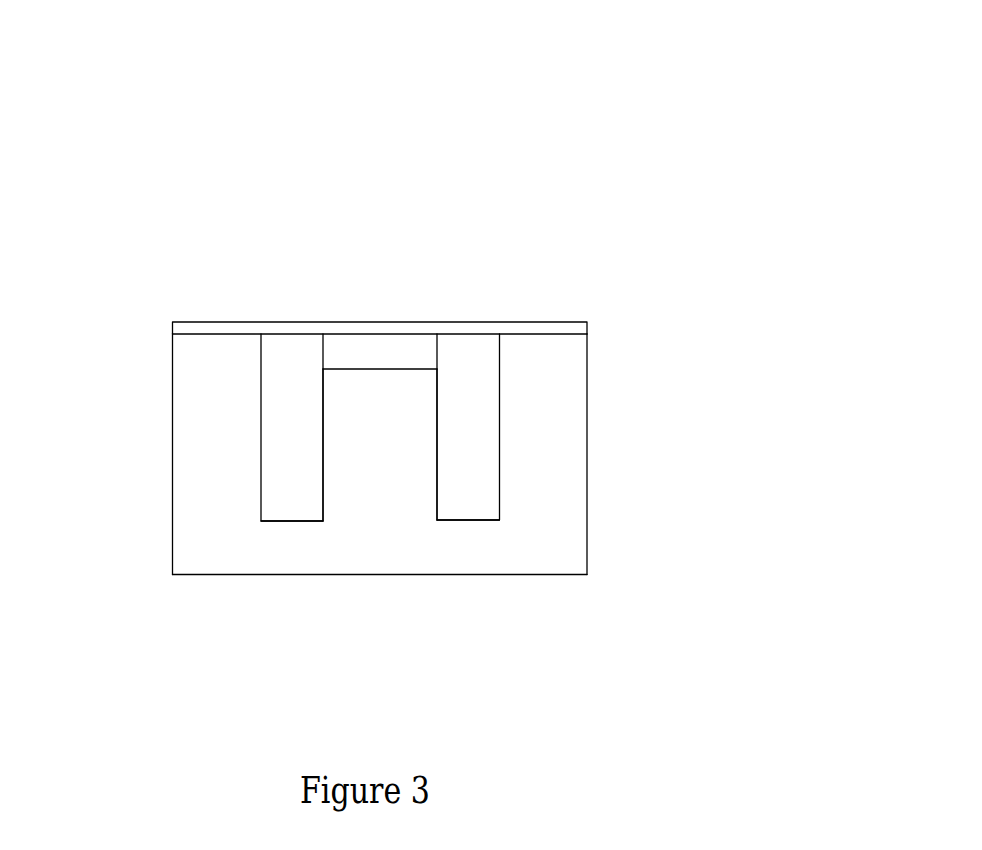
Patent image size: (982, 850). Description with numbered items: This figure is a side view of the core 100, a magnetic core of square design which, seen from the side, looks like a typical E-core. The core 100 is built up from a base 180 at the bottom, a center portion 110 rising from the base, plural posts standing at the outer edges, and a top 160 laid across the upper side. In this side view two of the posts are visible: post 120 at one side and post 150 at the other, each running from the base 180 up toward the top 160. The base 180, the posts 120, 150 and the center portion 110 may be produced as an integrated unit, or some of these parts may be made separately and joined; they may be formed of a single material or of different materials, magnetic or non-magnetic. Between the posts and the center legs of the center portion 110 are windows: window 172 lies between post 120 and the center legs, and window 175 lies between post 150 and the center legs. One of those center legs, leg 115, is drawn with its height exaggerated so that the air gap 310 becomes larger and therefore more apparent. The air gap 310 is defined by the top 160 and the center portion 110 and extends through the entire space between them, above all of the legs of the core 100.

The core 100 is at (487, 684).
The center portion 110 is at (367, 490).
The leg 115 is at (406, 400).
The post 120 is at (563, 447).
The post 150 is at (209, 470).
The top 160 is at (398, 322).
The window 172 is at (474, 413).
The window 175 is at (284, 418).
The base 180 is at (552, 557).
The air gap 310 is at (368, 350).